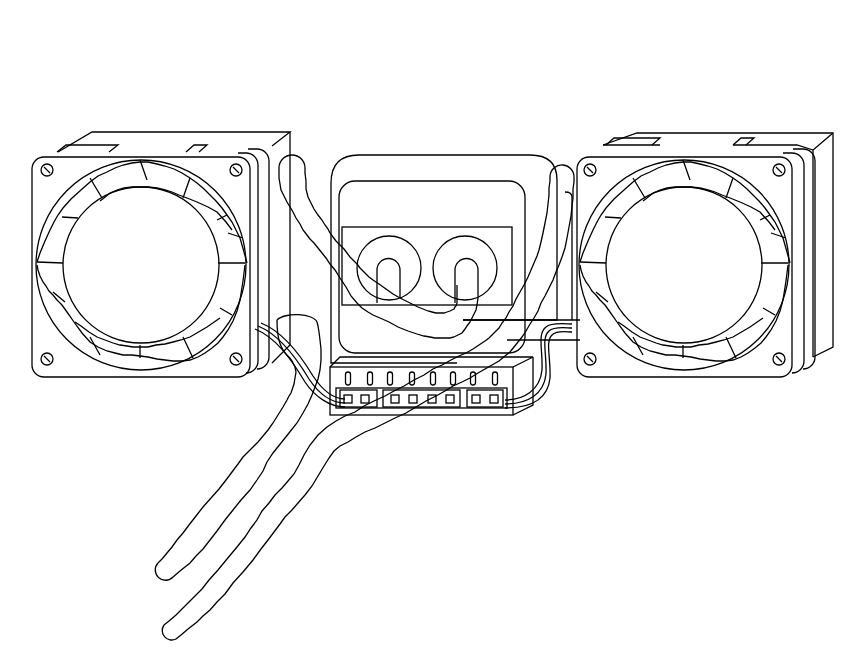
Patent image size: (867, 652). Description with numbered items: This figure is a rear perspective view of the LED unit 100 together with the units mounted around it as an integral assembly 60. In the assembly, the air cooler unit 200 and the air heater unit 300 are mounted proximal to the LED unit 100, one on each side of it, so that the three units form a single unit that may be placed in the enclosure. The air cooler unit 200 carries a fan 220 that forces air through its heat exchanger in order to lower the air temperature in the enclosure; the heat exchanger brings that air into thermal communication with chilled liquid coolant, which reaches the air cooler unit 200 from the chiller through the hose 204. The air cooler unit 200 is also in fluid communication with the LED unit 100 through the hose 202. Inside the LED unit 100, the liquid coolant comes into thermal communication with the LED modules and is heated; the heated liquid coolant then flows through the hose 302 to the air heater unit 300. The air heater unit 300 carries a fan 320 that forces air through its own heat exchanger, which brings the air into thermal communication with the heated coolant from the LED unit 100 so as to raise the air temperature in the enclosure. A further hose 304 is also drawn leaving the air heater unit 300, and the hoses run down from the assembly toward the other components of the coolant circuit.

The integral assembly 60 is at (771, 32).
The LED unit 100 is at (445, 162).
The air cooler unit 200 is at (708, 140).
The hose 202 is at (537, 332).
The hose 204 is at (333, 443).
The fan 220 is at (703, 280).
The air heater unit 300 is at (167, 142).
The hose 302 is at (305, 188).
The third hose 304 is at (240, 472).
The fan 320 is at (159, 280).